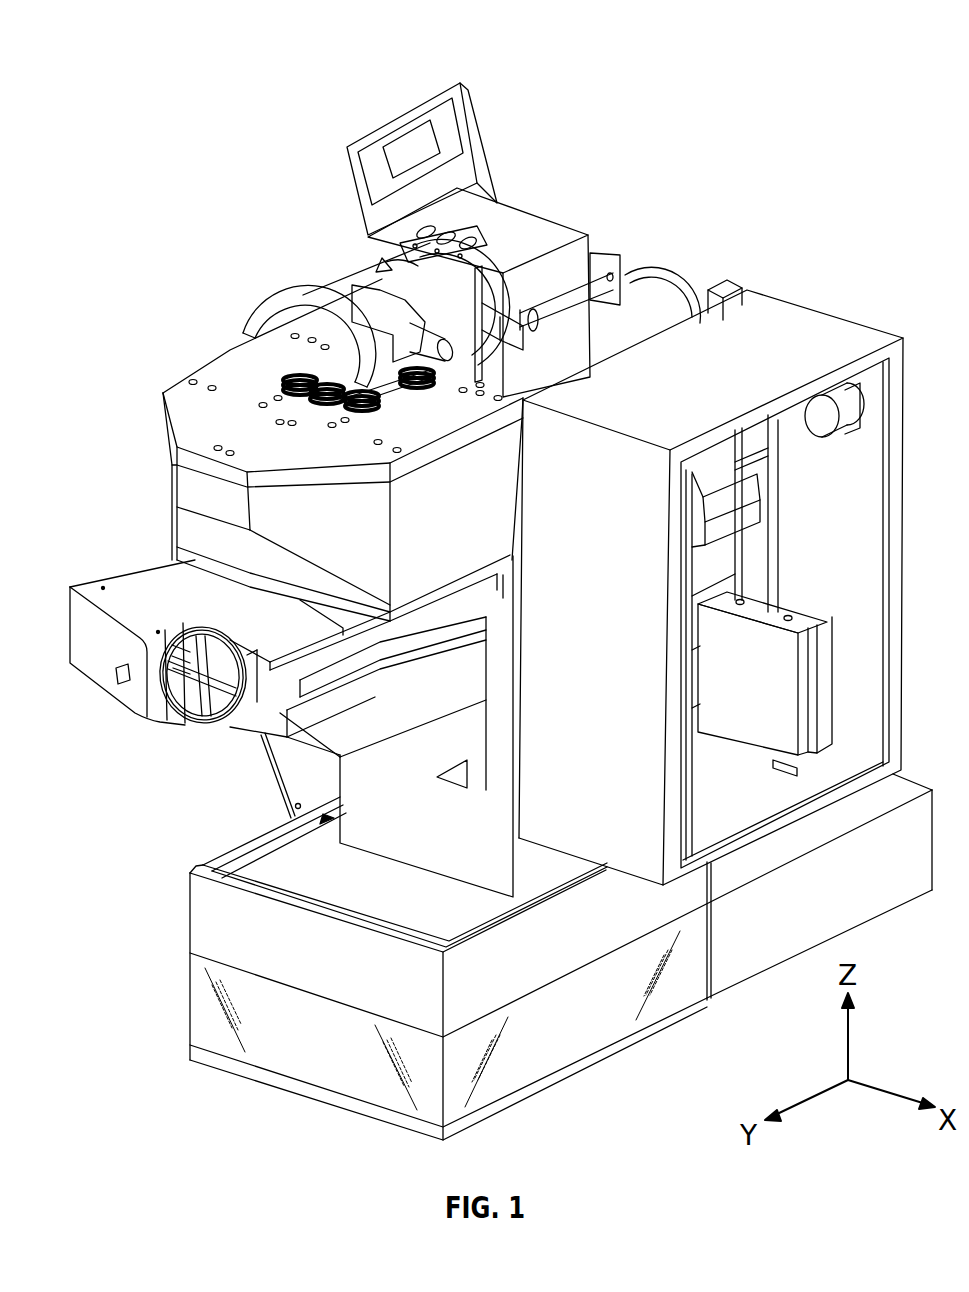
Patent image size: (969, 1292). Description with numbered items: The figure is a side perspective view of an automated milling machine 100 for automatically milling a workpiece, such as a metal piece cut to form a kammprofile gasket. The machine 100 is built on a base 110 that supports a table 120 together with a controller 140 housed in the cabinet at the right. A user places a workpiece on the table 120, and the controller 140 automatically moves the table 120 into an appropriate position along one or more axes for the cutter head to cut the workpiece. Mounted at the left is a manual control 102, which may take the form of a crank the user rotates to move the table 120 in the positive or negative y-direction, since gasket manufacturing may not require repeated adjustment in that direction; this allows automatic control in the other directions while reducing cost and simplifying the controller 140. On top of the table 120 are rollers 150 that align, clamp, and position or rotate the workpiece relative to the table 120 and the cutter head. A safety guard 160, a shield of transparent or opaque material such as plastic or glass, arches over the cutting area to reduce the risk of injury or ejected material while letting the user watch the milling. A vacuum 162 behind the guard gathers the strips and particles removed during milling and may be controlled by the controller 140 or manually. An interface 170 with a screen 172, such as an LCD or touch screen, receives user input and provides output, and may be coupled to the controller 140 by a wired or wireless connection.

The automated milling machine 100 is at (793, 47).
The manual control 102 is at (183, 628).
The base 110 is at (206, 880).
The table 120 is at (173, 398).
The controller 140 is at (822, 331).
The rollers 150 is at (284, 378).
The safety guard 160 is at (356, 275).
The vacuum 162 is at (445, 300).
The interface 170 is at (374, 118).
The screen 172 is at (423, 138).